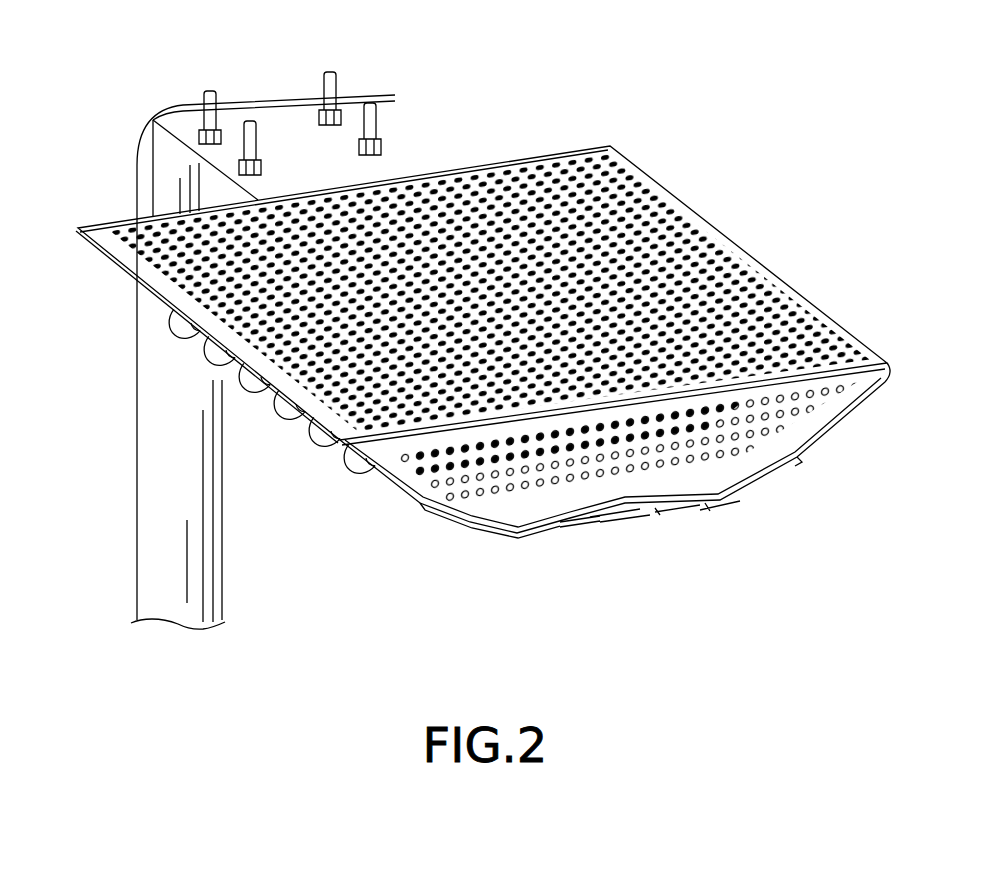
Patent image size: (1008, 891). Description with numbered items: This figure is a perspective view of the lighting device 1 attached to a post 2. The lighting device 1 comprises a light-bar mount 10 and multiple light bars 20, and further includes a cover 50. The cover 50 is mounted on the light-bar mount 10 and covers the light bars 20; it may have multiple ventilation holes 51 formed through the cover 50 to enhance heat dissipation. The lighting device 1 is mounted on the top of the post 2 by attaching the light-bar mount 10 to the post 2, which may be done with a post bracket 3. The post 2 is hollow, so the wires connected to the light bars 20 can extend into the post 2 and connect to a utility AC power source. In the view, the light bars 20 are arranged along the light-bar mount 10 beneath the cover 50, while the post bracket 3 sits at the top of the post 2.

The lighting device 1 is at (742, 162).
The post 2 is at (130, 372).
The post bracket 3 is at (264, 97).
The light-bar mount 10 is at (695, 520).
The light bars 20 is at (392, 485).
The cover 50 is at (594, 143).
The perforation holes 51 is at (512, 175).